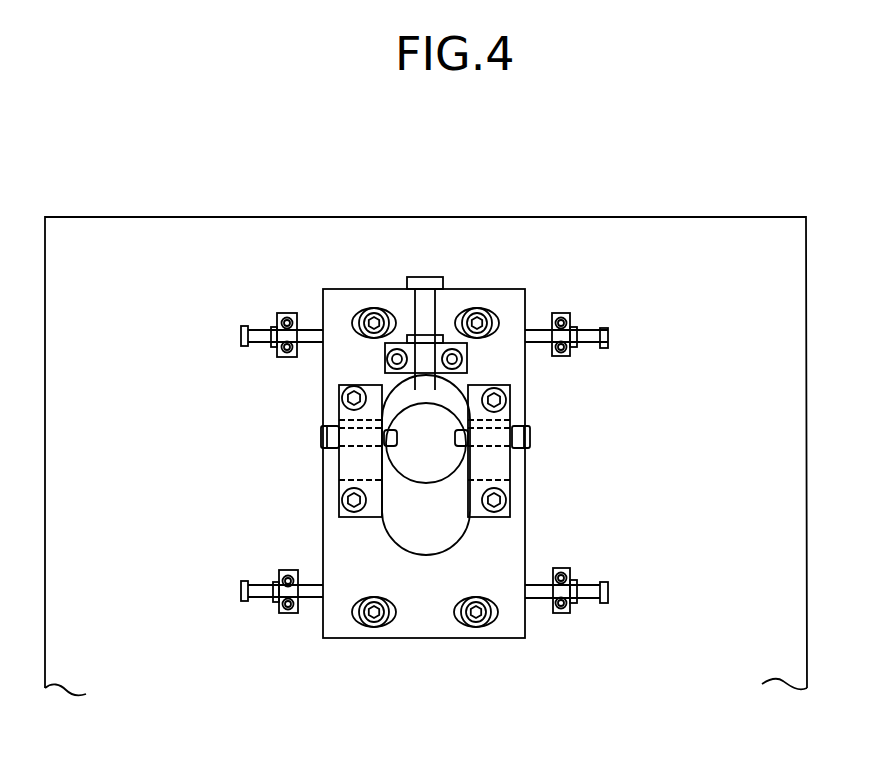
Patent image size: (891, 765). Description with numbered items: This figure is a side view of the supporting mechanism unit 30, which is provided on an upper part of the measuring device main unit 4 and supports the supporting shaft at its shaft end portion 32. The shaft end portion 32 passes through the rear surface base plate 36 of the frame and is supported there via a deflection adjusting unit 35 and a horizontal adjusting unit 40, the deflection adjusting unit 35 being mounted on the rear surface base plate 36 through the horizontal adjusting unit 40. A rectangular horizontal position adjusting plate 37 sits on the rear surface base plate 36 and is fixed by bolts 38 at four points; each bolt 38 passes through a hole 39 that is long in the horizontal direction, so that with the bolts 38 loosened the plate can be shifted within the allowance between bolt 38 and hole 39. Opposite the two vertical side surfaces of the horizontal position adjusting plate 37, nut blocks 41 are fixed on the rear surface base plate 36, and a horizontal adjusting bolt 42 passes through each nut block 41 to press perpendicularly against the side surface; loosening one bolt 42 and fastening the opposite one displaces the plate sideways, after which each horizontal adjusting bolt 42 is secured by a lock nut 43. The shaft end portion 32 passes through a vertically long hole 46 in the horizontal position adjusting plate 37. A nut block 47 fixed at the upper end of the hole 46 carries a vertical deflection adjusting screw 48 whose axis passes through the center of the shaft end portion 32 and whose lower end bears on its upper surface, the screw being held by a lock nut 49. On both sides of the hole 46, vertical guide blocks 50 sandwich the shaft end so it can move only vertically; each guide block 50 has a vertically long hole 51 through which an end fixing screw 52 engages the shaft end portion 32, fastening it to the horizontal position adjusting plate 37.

The measuring device main unit 4 is at (612, 185).
The supporting mechanism unit 30 is at (167, 150).
The shaft end portion 32 is at (403, 487).
The deflection adjusting unit 35 is at (358, 353).
The rear surface base plate 36 is at (712, 577).
The horizontal position adjusting plate 37 is at (526, 478).
The bolt 38 is at (485, 624).
The hole 39 is at (496, 598).
The horizontal adjusting unit 40 is at (543, 295).
The nut block 41 is at (561, 572).
The horizontal adjusting bolt 42 is at (604, 583).
The lock nut 43 is at (569, 608).
The hole 46 is at (433, 530).
The nut block 47 is at (402, 300).
The deflection adjusting screw 48 is at (446, 277).
The lock nut 49 is at (438, 343).
The vertical guide block 50 is at (344, 499).
The long hole 51 is at (357, 480).
The end fixing screw 52 is at (326, 426).